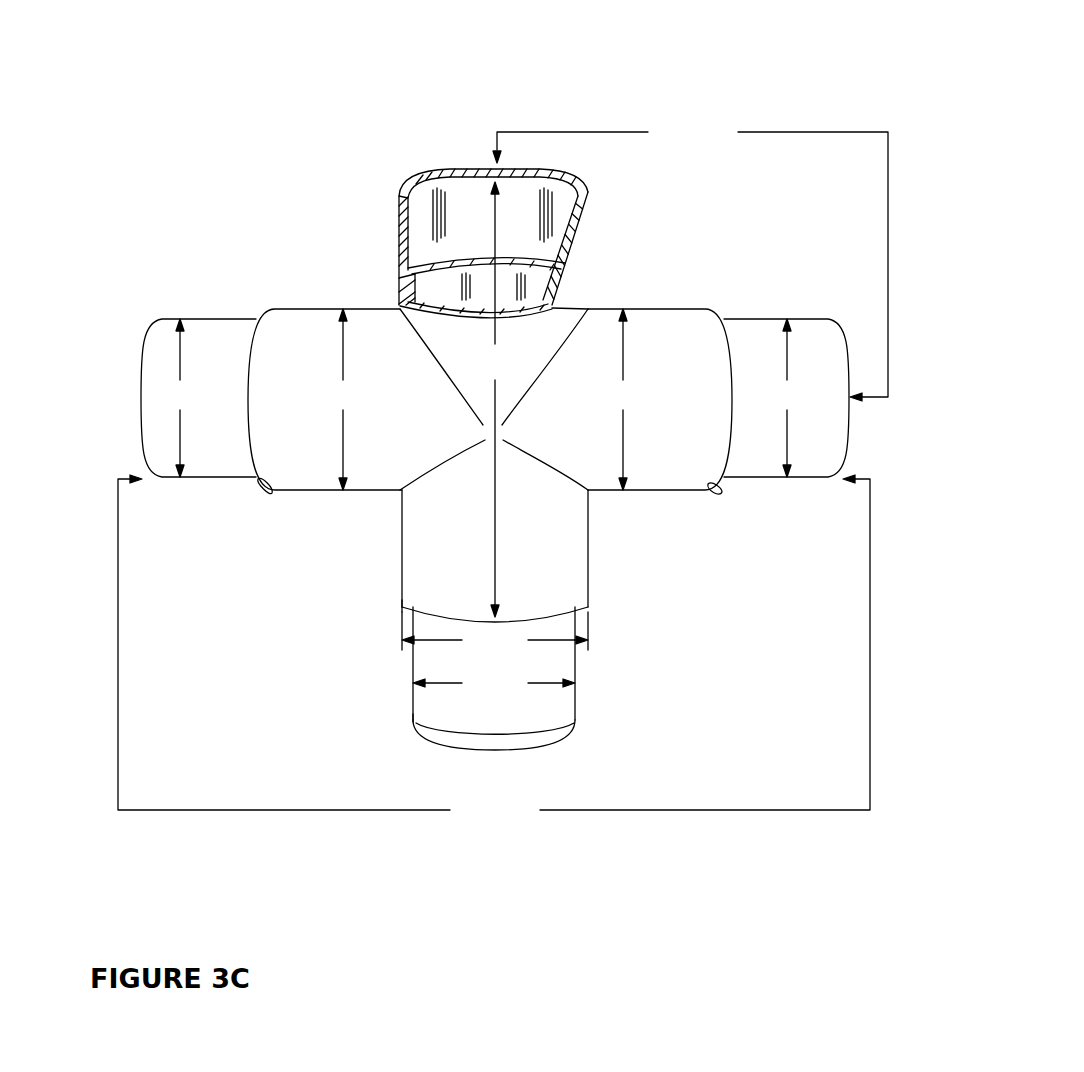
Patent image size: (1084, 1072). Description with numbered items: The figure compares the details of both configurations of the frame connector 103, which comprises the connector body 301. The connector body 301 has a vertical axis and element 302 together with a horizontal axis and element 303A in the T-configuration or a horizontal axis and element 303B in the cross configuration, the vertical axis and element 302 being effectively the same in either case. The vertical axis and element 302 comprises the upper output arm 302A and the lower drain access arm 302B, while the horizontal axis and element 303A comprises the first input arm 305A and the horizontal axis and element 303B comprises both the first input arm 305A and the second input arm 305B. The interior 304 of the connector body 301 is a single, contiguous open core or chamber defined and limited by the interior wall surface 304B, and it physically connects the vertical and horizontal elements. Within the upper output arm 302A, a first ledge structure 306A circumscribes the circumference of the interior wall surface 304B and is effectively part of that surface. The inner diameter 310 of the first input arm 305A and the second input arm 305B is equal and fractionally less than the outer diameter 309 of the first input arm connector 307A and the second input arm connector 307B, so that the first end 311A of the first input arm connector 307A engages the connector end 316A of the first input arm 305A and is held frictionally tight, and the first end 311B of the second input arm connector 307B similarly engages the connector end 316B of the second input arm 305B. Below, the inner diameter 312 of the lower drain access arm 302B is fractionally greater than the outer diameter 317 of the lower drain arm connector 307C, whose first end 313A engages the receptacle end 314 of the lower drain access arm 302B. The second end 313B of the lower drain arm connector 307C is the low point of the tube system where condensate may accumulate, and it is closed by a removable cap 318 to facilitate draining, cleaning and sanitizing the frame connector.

The frame connector 103 is at (372, 78).
The connector body 301 is at (234, 212).
The vertical axis and element 302 is at (495, 399).
The upper output arm 302A is at (399, 208).
The lower drain access arm 302B is at (588, 571).
The horizontal axis and element of the T-configuration 303A is at (690, 259).
The horizontal axis and element of the cross-configuration 303B is at (494, 652).
The interior 304 is at (523, 203).
The interior wall surface 304B is at (446, 204).
The first input arm 305A is at (696, 309).
The second input arm 305B is at (385, 308).
The first ledge structure 306A is at (548, 266).
The first input arm connector 307A is at (783, 318).
The second input arm connector 307B is at (205, 318).
The lower drain arm connector 307C is at (575, 672).
The outer diameter 309 is at (483, 398).
The inner diameter 310 is at (483, 399).
The first end of the first input arm connector 311A is at (717, 313).
The first end of the second input arm connector 311B is at (255, 316).
The inner diameter of the lower drain arm access 312 is at (495, 634).
The first end of the lower drain arm connector 313A is at (402, 607).
The second end of the lower drain arm connector 313B is at (414, 719).
The receptacle end 314 is at (422, 604).
The connector end of the first input arm 316A is at (716, 489).
The connector end of the second input arm 316B is at (270, 493).
The outer diameter of the lower drain arm connector 317 is at (494, 683).
The removable cap 318 is at (568, 736).